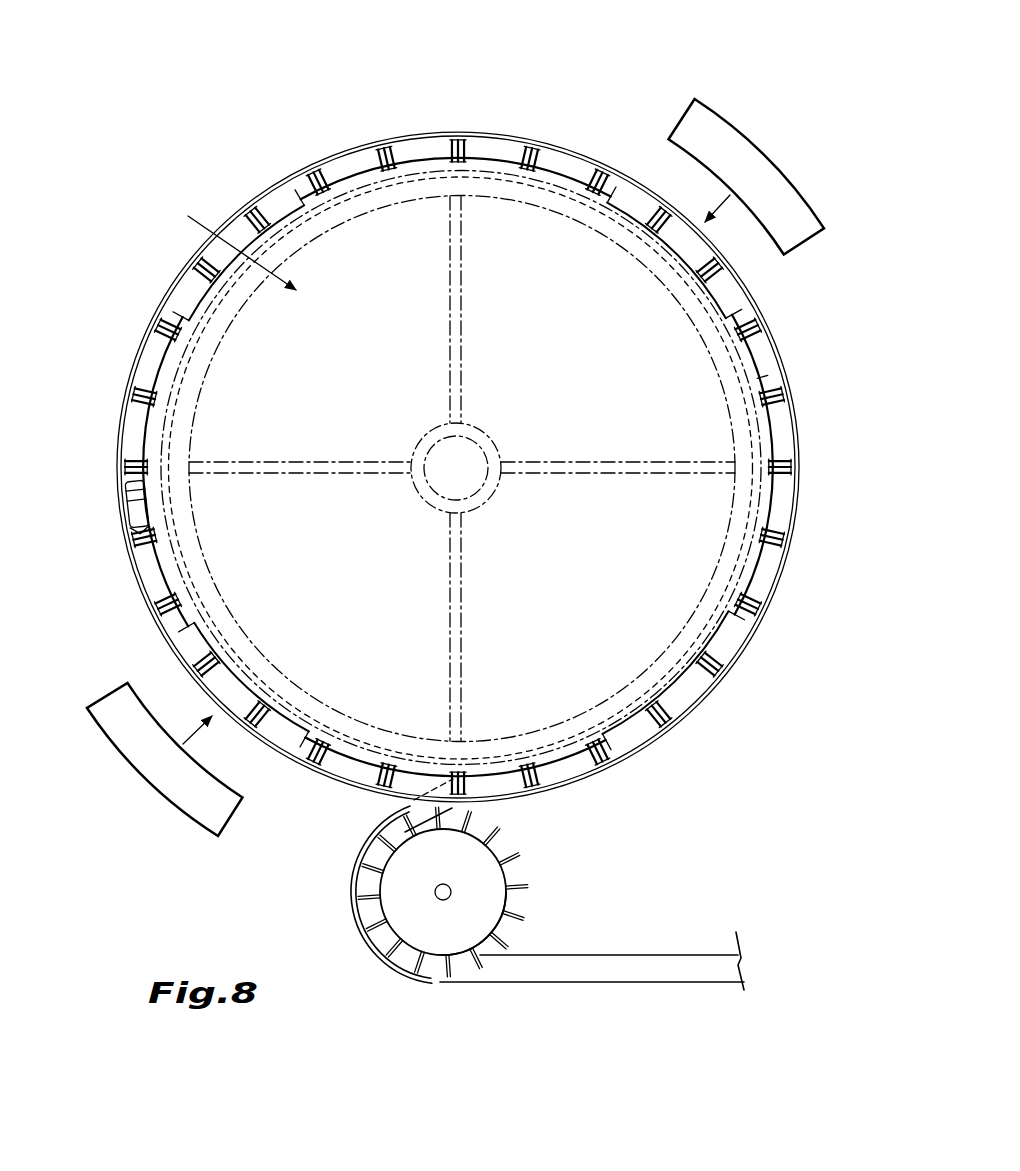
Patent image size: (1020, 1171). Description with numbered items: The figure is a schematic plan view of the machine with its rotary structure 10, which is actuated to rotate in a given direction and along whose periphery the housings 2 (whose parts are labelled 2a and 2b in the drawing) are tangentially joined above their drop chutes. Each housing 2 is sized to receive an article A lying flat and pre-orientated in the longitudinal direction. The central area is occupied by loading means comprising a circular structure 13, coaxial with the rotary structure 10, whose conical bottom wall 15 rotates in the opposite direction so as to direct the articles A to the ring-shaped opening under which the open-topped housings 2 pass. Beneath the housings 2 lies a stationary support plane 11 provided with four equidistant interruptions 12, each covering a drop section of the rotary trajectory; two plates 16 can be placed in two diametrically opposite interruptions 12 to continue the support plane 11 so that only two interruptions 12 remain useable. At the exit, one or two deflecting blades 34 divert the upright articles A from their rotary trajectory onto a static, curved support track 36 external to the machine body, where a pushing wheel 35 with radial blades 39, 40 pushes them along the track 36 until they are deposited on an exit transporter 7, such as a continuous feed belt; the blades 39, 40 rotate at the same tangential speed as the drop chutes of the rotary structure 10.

The housing 2 is at (419, 146).
The outer wall of drum 2a is at (389, 143).
The receptacle of drum 2b is at (450, 142).
The exit transporter 7 is at (630, 982).
The rotary structure 10 is at (762, 374).
The stationary support plane 11 is at (504, 146).
The interruption 12 is at (265, 193).
The circular structure 13 is at (223, 236).
The bottom wall 15 is at (407, 345).
The plate 16 is at (760, 164).
The deflecting blade 34 is at (400, 805).
The pushing wheel 35 is at (482, 866).
The curved support track 36 is at (362, 910).
The radial blade 39 is at (520, 896).
The radial blade 40 is at (522, 886).
The article A is at (130, 516).